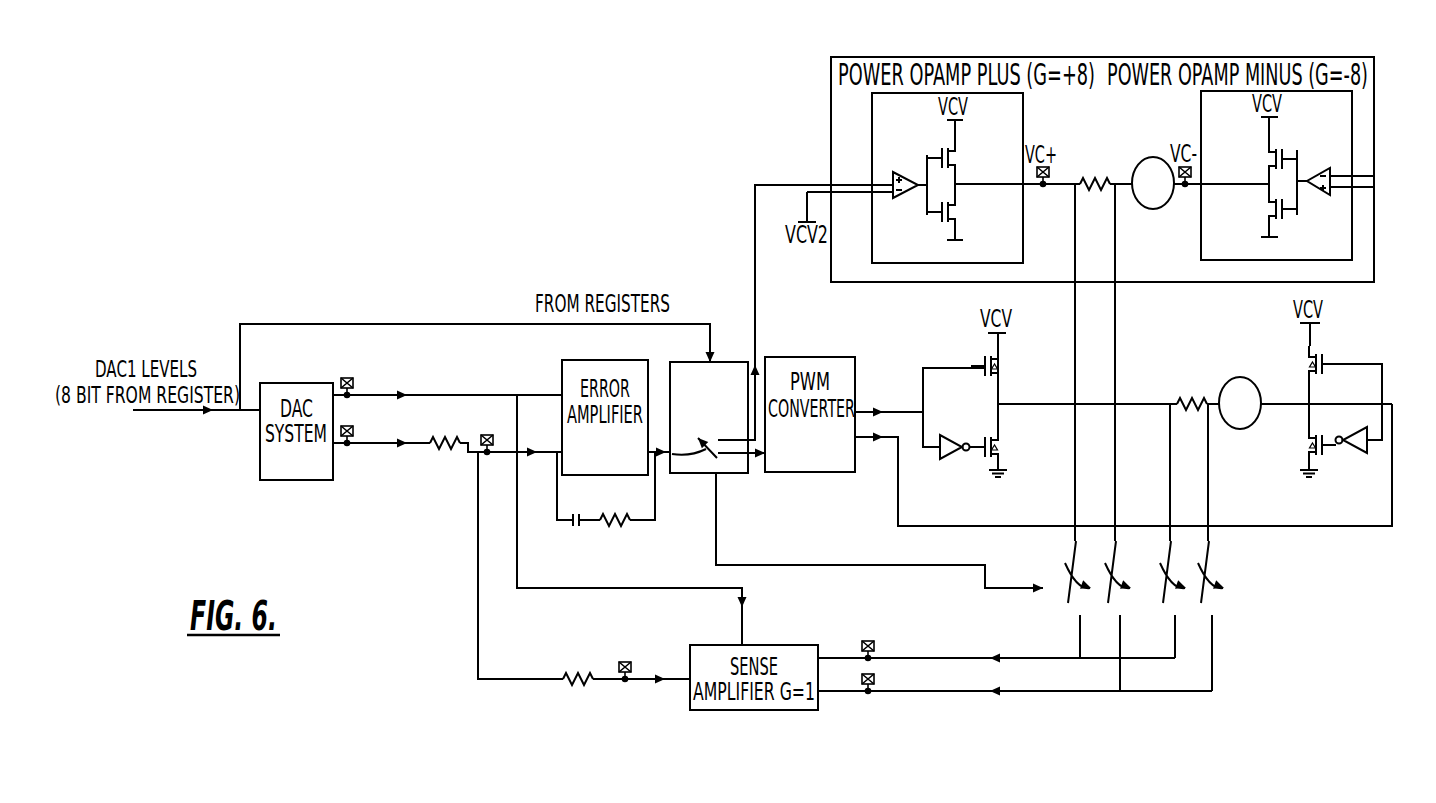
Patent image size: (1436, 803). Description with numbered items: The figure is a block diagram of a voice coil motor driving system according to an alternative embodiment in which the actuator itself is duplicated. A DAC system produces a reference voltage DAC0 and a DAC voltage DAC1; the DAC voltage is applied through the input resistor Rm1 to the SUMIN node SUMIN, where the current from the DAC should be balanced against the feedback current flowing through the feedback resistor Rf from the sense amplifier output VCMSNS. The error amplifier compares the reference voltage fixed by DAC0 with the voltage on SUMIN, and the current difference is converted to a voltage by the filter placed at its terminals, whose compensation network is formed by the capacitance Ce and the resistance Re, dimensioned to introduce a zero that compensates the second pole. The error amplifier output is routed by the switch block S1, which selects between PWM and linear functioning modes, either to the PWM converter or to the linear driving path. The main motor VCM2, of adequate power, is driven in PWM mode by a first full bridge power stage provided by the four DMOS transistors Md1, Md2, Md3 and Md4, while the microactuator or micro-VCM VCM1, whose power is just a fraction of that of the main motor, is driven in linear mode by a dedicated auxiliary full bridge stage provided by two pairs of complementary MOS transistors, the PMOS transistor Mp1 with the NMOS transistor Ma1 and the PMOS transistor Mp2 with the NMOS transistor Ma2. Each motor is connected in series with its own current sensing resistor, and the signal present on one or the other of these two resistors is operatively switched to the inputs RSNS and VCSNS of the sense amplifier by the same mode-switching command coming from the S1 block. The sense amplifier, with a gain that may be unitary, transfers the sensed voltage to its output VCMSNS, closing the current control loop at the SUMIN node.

The input resistor Rm1 is at (443, 429).
The compensation capacitance Ce is at (576, 506).
The compensation resistance Re is at (615, 506).
The feedback resistor Rf is at (578, 667).
The micro-VCM VCM1 is at (1153, 183).
The VCM motor VCM2 is at (1240, 403).
The S1 block S1 is at (708, 417).
The PMOS transistor Mp1 is at (971, 148).
The NMOS transistor Ma1 is at (973, 215).
The PMOS transistor Mp2 is at (1253, 148).
The NMOS transistor Ma2 is at (1253, 215).
The DMOS transistor Md1 is at (1014, 361).
The DMOS transistor Md2 is at (1014, 444).
The DMOS transistor Md3 is at (1291, 356).
The DMOS transistor Md4 is at (1291, 455).
The reference voltage DAC0 is at (370, 382).
The DAC voltage DAC1 is at (370, 430).
The SUMIN node SUMIN is at (487, 433).
The VCM sense voltage VCMSNS is at (625, 659).
The sense amplifier input RSNS is at (893, 649).
The sense amplifier input VCSNS is at (896, 680).